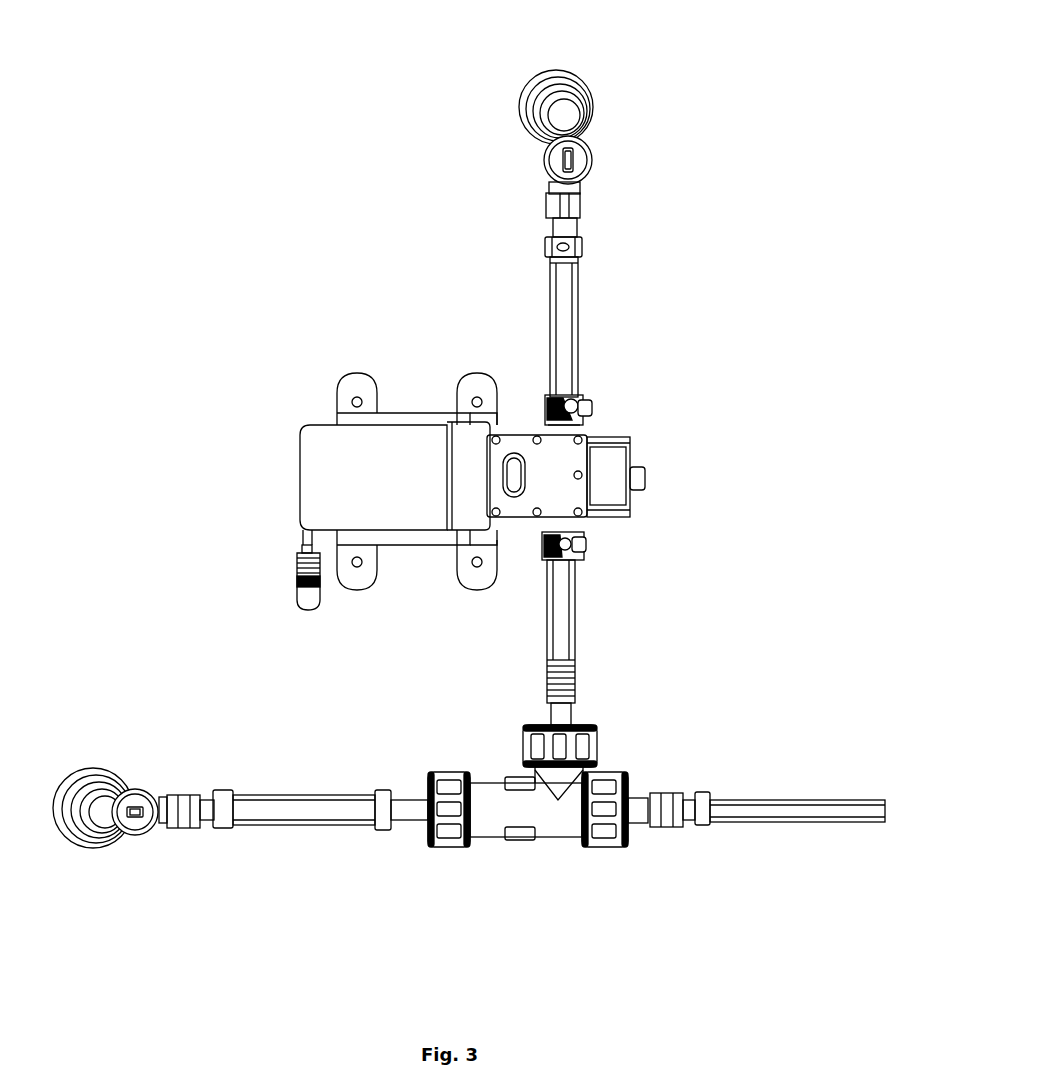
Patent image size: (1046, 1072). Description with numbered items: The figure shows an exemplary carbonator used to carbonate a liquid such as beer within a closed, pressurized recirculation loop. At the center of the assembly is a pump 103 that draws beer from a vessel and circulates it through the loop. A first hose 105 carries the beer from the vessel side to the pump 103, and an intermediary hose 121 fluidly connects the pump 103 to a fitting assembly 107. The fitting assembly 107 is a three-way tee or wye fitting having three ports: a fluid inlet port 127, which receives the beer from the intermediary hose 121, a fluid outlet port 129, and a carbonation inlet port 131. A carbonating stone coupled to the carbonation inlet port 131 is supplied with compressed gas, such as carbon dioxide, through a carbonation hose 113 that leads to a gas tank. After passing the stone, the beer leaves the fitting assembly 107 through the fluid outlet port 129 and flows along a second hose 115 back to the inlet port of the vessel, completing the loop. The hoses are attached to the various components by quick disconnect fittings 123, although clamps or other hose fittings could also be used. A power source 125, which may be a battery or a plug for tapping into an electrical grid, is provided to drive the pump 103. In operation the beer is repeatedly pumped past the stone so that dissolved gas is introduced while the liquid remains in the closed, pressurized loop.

The pump 103 is at (388, 457).
The first hose 105 is at (577, 333).
The fitting assembly 107 is at (540, 803).
The carbonation hose 113 is at (737, 800).
The second hose 115 is at (305, 790).
The intermediary hose 121 is at (577, 613).
The quick disconnect fittings 123 is at (596, 118).
The power source 125 is at (297, 583).
The fluid inlet port 127 is at (597, 733).
The fluid outlet port 129 is at (450, 840).
The carbonation inlet port 131 is at (620, 840).